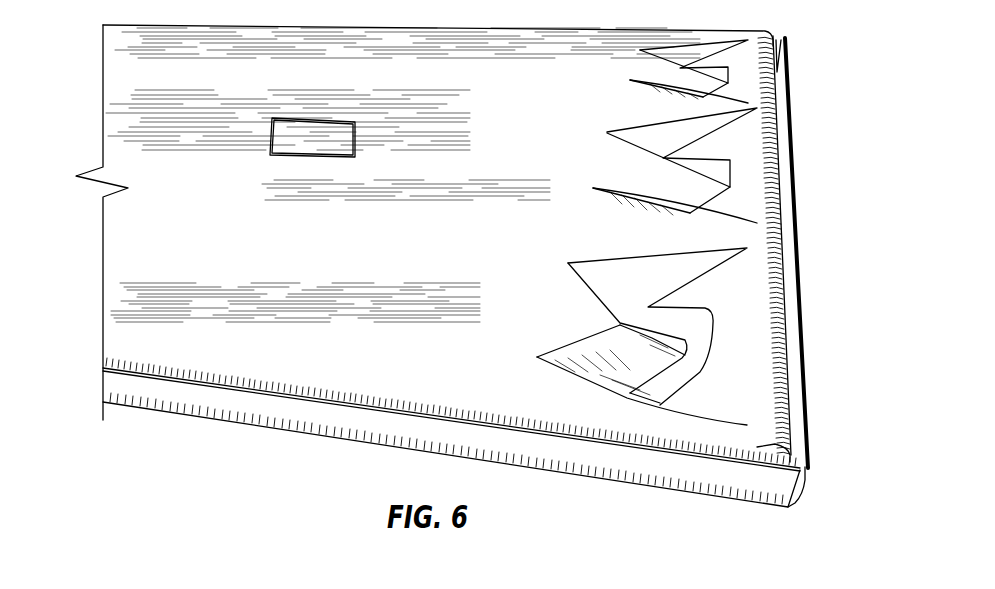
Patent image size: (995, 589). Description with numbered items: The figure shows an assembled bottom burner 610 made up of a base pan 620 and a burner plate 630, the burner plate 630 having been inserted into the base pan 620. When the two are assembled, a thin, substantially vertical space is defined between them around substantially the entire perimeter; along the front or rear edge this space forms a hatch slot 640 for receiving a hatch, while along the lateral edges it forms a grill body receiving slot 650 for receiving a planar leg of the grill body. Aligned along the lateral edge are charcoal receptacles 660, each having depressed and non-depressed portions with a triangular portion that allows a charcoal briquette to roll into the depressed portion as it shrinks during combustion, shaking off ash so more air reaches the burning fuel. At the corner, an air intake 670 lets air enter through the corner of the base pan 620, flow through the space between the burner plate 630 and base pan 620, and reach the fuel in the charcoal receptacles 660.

The bottom burner 610 is at (145, 478).
The base pan 620 is at (368, 430).
The burner plate 630 is at (354, 254).
The hatch slot 640 is at (505, 423).
The grill body receiving slot 650 is at (803, 293).
The charcoal receptacles 660 is at (618, 323).
The air intake 670 is at (806, 480).